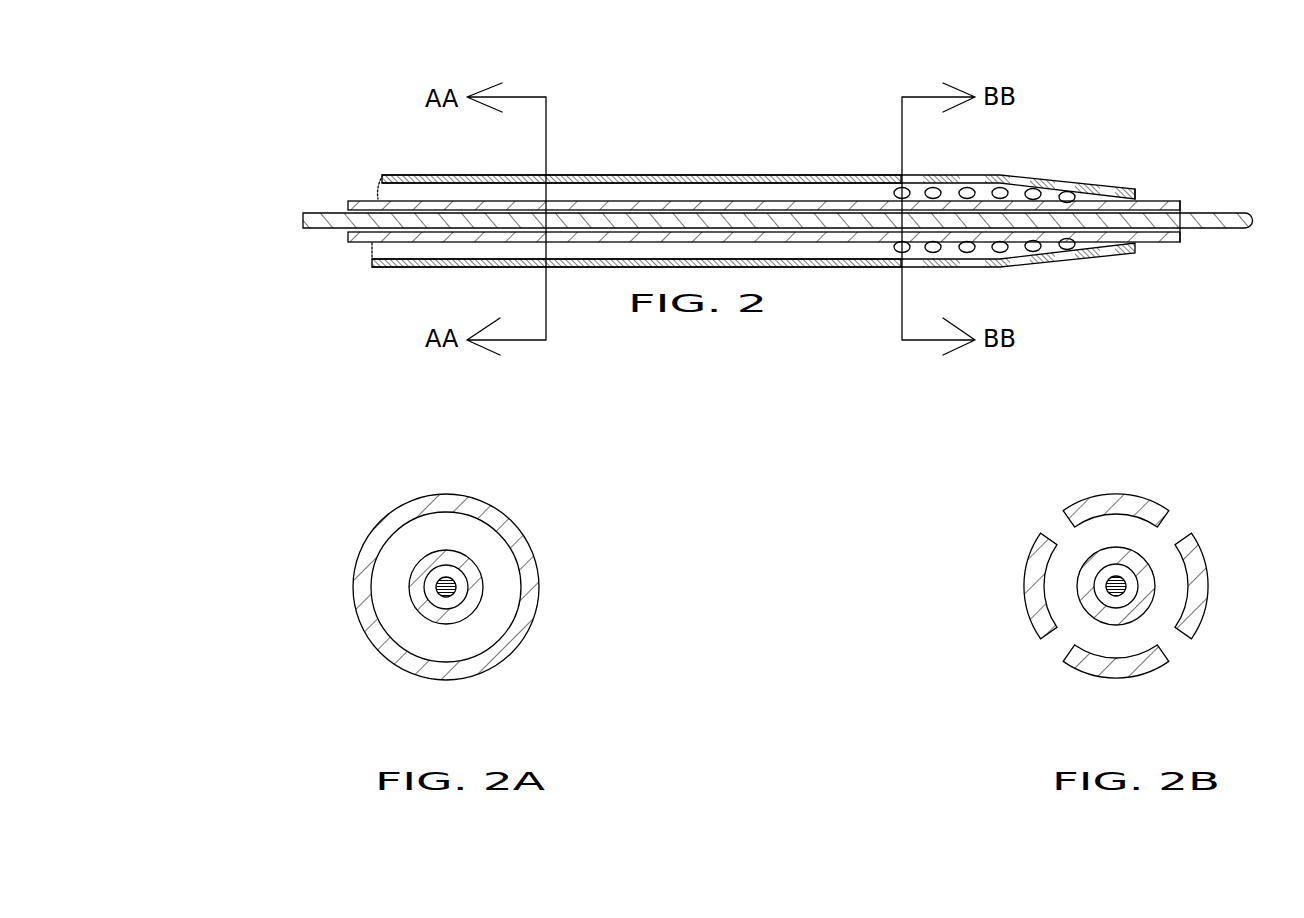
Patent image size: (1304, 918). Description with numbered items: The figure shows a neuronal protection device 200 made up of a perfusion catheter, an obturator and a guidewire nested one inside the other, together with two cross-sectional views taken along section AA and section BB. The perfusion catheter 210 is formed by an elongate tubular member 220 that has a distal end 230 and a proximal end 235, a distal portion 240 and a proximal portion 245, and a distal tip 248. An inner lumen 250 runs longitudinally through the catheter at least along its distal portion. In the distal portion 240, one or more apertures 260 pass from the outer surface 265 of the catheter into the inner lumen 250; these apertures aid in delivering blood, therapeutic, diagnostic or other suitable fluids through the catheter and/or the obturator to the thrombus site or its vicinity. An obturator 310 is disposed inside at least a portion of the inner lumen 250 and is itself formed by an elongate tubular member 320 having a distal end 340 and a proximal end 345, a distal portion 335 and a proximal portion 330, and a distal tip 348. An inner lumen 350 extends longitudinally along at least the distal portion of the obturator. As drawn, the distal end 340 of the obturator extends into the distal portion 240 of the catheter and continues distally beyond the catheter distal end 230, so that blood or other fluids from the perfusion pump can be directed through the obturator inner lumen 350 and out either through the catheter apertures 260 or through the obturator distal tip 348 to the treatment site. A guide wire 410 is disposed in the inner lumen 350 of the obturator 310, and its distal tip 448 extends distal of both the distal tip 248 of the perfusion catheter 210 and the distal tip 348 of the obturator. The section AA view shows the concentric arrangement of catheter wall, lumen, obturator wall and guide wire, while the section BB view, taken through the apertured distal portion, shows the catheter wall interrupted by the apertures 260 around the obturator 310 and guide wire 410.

In FIG. 2, the neuronal protection device 200 is at (760, 219).
In FIG. 2, the perfusion catheter 210 is at (731, 226).
In FIG. 2A, the perfusion catheter 210 is at (390, 508).
In FIG. 2, the tubular member 220 is at (753, 226).
In FIG. 2, the distal end 230 is at (753, 226).
In FIG. 2, the proximal end 235 is at (403, 180).
In FIG. 2, the distal portion 240 is at (952, 308).
In FIG. 2, the proximal portion 245 is at (353, 292).
In FIG. 2, the distal tip 248 is at (1127, 188).
In FIG. 2, the inner lumen 250 is at (813, 193).
In FIG. 2A, the inner lumen 250 is at (425, 522).
In FIG. 2B, the inner lumen 250 is at (1057, 572).
In FIG. 2, the apertures 260 is at (992, 183).
In FIG. 2B, the apertures 260 is at (1034, 566).
In FIG. 2B, the outer surface 265 is at (1020, 600).
In FIG. 2, the obturator 310 is at (815, 216).
In FIG. 2A, the obturator 310 is at (475, 558).
In FIG. 2B, the obturator 310 is at (1085, 608).
In FIG. 2, the tubular member 320 is at (710, 202).
In FIG. 2, the proximal portion 330 is at (573, 240).
In FIG. 2, the distal portion 335 is at (805, 280).
In FIG. 2, the distal end 340 is at (950, 205).
In FIG. 2, the proximal end 345 is at (437, 198).
In FIG. 2, the distal tip 348 is at (1185, 203).
In FIG. 2, the inner lumen 350 is at (778, 209).
In FIG. 2A, the inner lumen 350 is at (457, 592).
In FIG. 2B, the inner lumen 350 is at (1122, 602).
In FIG. 2, the guide wire 410 is at (778, 190).
In FIG. 2A, the guide wire 410 is at (556, 667).
In FIG. 2B, the guide wire 410 is at (1135, 587).
In FIG. 2, the distal tip 448 is at (1233, 225).